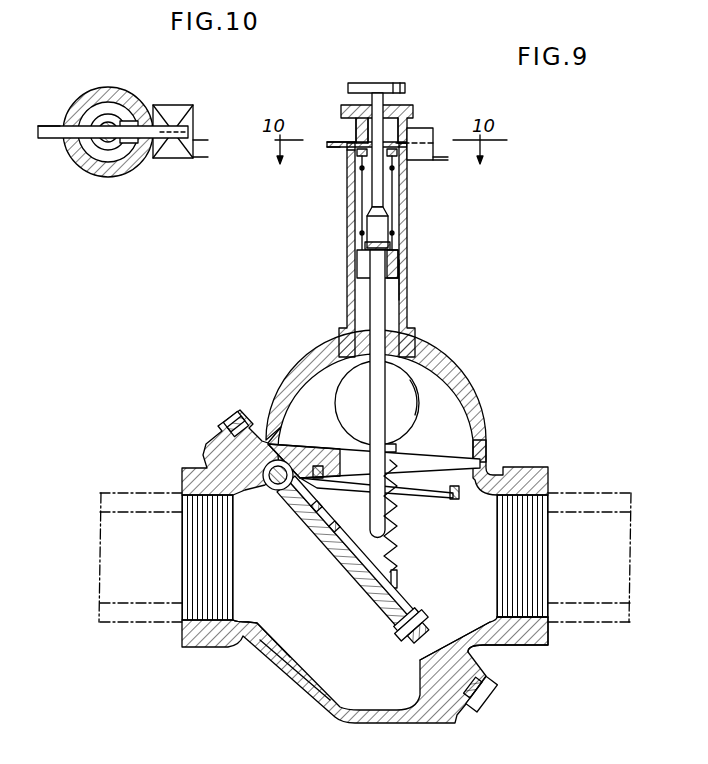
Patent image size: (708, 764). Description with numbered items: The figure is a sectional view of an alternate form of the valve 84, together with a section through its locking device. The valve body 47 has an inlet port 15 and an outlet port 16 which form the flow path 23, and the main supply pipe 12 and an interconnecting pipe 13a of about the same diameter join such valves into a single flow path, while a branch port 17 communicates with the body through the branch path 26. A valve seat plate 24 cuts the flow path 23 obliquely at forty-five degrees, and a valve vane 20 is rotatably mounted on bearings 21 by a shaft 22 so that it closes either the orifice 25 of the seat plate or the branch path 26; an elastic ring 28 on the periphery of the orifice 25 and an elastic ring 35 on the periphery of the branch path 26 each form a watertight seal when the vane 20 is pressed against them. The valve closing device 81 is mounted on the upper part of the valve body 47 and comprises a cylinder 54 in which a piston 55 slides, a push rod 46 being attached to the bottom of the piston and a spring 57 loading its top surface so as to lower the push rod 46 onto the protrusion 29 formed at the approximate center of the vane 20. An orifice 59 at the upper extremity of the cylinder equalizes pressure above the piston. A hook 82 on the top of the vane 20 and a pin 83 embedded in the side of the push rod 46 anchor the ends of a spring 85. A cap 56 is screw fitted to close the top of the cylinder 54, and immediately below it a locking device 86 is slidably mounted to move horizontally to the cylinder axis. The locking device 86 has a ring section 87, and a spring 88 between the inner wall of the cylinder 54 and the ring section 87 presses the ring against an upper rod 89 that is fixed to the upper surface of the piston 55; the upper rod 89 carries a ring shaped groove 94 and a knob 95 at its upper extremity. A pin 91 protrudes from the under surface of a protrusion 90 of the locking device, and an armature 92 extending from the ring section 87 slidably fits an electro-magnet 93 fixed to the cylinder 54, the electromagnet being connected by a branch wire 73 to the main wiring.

In FIG. 9, the main supply pipe 12 is at (581, 612).
In FIG. 9, the interconnecting pipe 13a is at (130, 610).
In FIG. 9, the inlet port 15 is at (488, 636).
In FIG. 9, the outlet port 16 is at (256, 626).
In FIG. 9, the branch port 17 is at (409, 392).
In FIG. 9, the valve vane 20 is at (418, 613).
In FIG. 9, the bearings 21 is at (265, 440).
In FIG. 9, the shaft 22 is at (272, 488).
In FIG. 9, the flow path 23 is at (291, 576).
In FIG. 9, the valve seat plate 24 is at (408, 643).
In FIG. 9, the orifice 25 is at (331, 560).
In FIG. 9, the branch path 26 is at (333, 460).
In FIG. 9, the elastic ring 28 is at (393, 627).
In FIG. 9, the protrusion 29 is at (367, 541).
In FIG. 9, the elastic ring 35 is at (457, 500).
In FIG. 9, the push rod 46 is at (371, 398).
In FIG. 9, the valve body 47 is at (463, 388).
In FIG. 10, the cylinder 54 is at (107, 178).
In FIG. 9, the cylinder 54 is at (408, 307).
In FIG. 9, the piston 55 is at (358, 272).
In FIG. 9, the cap 56 is at (413, 110).
In FIG. 9, the spring 57 is at (356, 233).
In FIG. 9, the orifice 59 is at (346, 156).
In FIG. 10, the branch wire 73 is at (200, 160).
In FIG. 9, the branch wire 73 is at (440, 160).
In FIG. 9, the valve closing device 81 is at (410, 281).
In FIG. 9, the hook 82 is at (398, 578).
In FIG. 9, the pin 83 is at (397, 448).
In FIG. 9, the valve 84 is at (282, 680).
In FIG. 9, the spring 85 is at (399, 525).
In FIG. 10, the locking device 86 is at (54, 140).
In FIG. 9, the locking device 86 is at (338, 140).
In FIG. 10, the ring section 87 is at (103, 108).
In FIG. 10, the spring 88 is at (133, 120).
In FIG. 10, the upper rod 89 is at (117, 143).
In FIG. 9, the upper rod 89 is at (379, 193).
In FIG. 10, the protrusion 90 is at (52, 126).
In FIG. 9, the protrusion 90 is at (330, 141).
In FIG. 9, the pin 91 is at (339, 150).
In FIG. 10, the armature 92 is at (188, 129).
In FIG. 10, the electro-magnet 93 is at (180, 104).
In FIG. 9, the electro-magnet 93 is at (427, 133).
In FIG. 9, the ring shaped groove 94 is at (384, 211).
In FIG. 9, the knob 95 is at (406, 86).